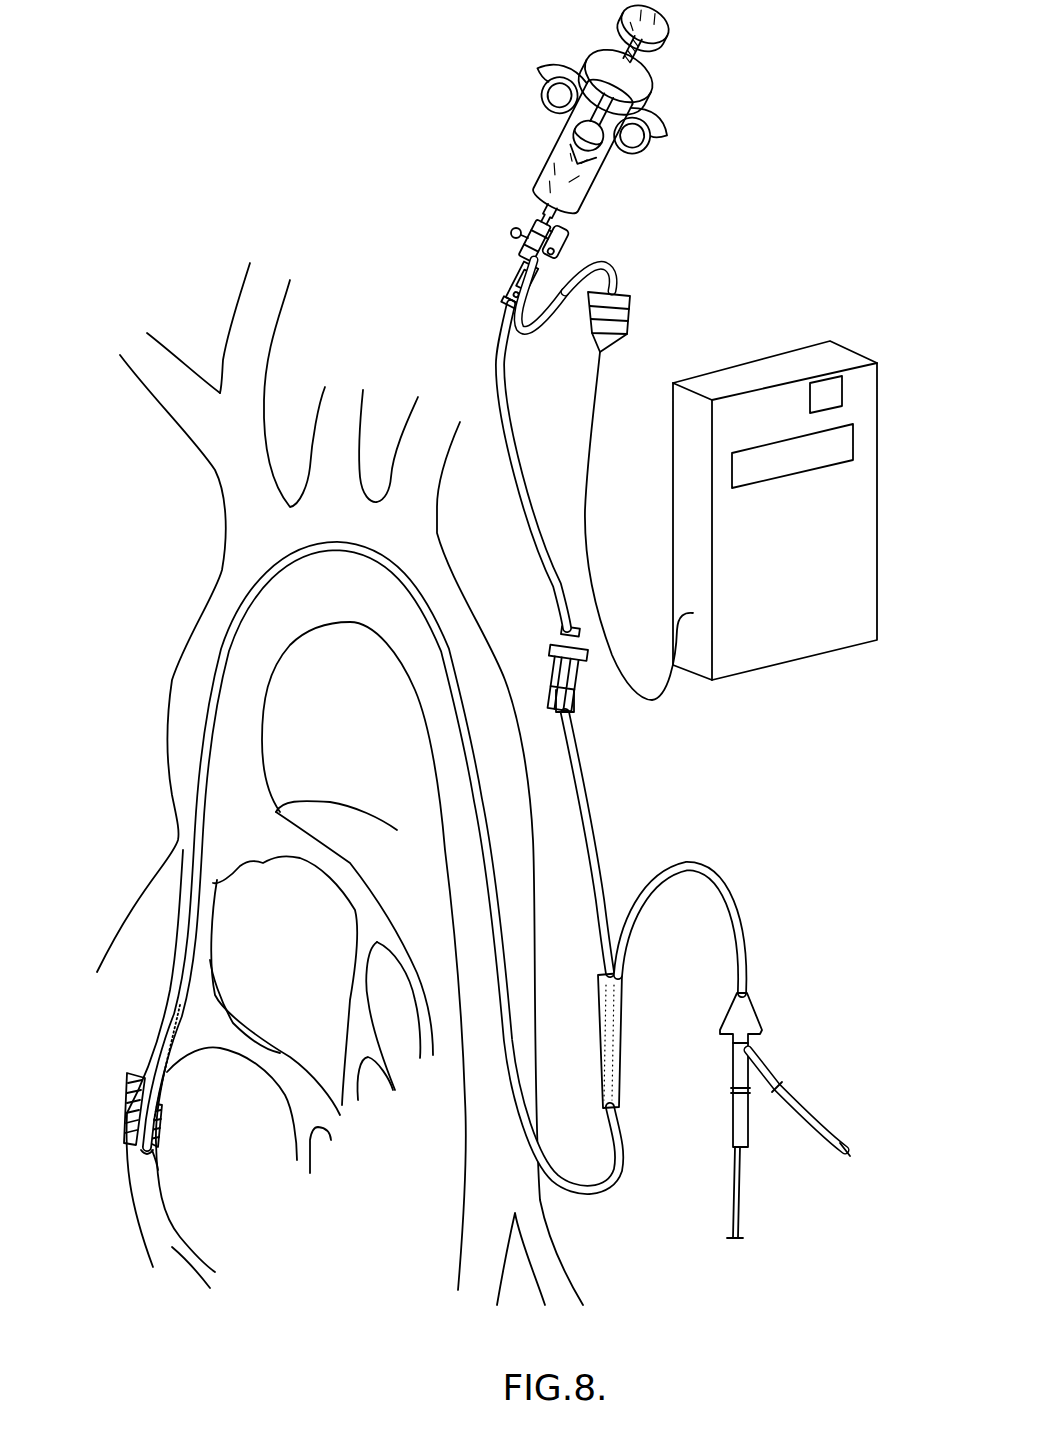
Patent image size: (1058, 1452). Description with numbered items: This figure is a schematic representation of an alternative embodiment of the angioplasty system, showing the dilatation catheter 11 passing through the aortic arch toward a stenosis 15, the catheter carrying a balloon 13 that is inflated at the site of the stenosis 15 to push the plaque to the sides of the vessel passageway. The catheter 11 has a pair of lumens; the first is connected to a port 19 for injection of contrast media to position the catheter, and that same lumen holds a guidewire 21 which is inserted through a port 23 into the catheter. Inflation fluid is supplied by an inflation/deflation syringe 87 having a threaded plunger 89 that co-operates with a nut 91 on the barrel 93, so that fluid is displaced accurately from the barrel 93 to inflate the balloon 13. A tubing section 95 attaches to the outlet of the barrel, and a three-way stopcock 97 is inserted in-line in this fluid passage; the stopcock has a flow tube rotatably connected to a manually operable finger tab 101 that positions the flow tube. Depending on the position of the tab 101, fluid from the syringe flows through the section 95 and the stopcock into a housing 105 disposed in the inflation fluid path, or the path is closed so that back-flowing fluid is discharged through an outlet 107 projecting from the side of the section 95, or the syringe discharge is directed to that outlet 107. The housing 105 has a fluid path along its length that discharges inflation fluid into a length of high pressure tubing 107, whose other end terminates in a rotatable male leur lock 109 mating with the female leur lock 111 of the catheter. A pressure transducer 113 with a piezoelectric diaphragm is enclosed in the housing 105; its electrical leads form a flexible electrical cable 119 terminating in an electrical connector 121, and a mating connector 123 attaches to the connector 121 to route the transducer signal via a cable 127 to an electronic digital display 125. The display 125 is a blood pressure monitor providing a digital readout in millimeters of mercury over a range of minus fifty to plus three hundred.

The dilatation catheter 11 is at (623, 1140).
The balloon 13 is at (167, 1057).
The stenosis 15 is at (128, 1110).
The port 19 is at (845, 1153).
The guidewire 21 is at (740, 1217).
The port 23 is at (741, 1153).
The inflation/deflation syringe 87 is at (597, 160).
The threaded plunger 89 is at (580, 120).
The nut 91 is at (660, 86).
The barrel 93 is at (540, 165).
The tubing section 95 is at (531, 225).
The three-way stopcock 97 is at (562, 228).
The finger tab 101 is at (570, 237).
The housing 105 is at (509, 283).
The outlet / high pressure tubing 107 is at (511, 236).
The rotatable male leur lock 109 is at (578, 677).
The female leur lock 111 is at (578, 703).
The pressure transducer 113 is at (514, 330).
The electrical cable 119 is at (618, 272).
The electrical connector 121 is at (632, 299).
The mating connector 123 is at (622, 329).
The electronic digital display 125 is at (787, 667).
The cable 127 is at (587, 465).